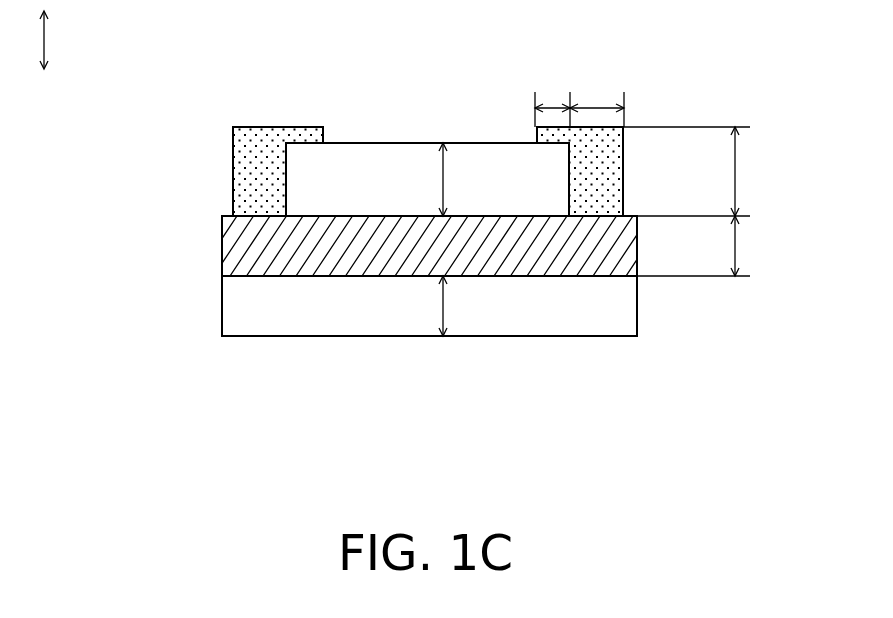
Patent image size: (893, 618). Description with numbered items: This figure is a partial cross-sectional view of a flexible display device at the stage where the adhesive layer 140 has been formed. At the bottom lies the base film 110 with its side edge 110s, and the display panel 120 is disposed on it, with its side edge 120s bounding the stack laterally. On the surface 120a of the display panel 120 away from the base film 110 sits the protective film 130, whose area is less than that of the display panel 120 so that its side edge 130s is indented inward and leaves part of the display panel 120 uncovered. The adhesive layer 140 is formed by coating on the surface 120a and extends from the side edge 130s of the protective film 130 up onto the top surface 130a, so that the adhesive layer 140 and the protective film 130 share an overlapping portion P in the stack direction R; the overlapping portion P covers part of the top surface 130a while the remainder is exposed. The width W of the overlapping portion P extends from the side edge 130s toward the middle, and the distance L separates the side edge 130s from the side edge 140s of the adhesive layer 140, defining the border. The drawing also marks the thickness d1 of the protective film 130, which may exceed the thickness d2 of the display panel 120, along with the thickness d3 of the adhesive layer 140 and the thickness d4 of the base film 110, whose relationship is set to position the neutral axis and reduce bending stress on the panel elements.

The base film 110 is at (625, 315).
The side edge of the base film 110s is at (221, 305).
The display panel 120 is at (625, 247).
The side edge of the display panel 120s is at (221, 247).
The surface of the display panel 120a is at (580, 213).
The protective film 130 is at (376, 157).
The side edge of the protective film 130s is at (284, 152).
The top surface of the protective film 130a is at (468, 139).
The adhesive layer 140 is at (608, 200).
The side edge of the adhesive layer 140s is at (232, 195).
The overlapping portion P is at (312, 133).
The width of the overlapping portion W is at (552, 97).
The distance L is at (597, 97).
The stack direction R is at (56, 40).
The thickness of the protective film d1 is at (456, 179).
The thickness of the display panel d2 is at (702, 246).
The thickness of the adhesive layer d3 is at (696, 171).
The thickness of the base film d4 is at (456, 306).